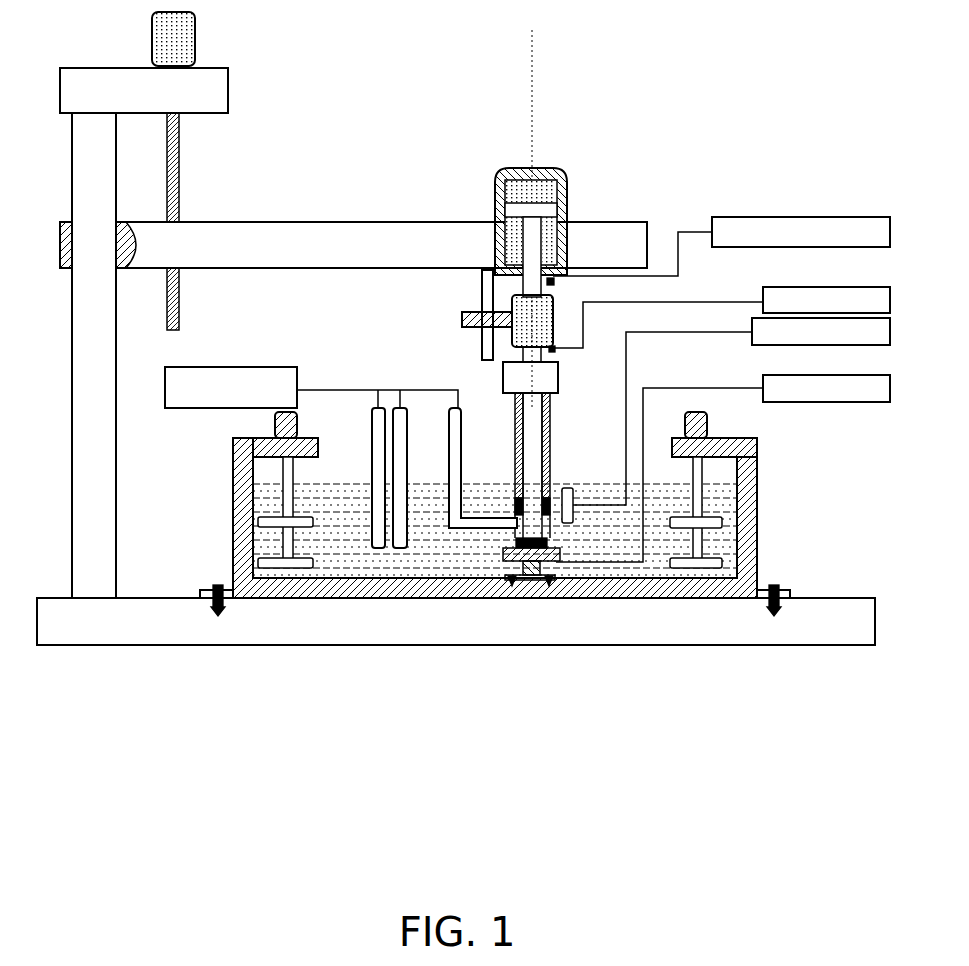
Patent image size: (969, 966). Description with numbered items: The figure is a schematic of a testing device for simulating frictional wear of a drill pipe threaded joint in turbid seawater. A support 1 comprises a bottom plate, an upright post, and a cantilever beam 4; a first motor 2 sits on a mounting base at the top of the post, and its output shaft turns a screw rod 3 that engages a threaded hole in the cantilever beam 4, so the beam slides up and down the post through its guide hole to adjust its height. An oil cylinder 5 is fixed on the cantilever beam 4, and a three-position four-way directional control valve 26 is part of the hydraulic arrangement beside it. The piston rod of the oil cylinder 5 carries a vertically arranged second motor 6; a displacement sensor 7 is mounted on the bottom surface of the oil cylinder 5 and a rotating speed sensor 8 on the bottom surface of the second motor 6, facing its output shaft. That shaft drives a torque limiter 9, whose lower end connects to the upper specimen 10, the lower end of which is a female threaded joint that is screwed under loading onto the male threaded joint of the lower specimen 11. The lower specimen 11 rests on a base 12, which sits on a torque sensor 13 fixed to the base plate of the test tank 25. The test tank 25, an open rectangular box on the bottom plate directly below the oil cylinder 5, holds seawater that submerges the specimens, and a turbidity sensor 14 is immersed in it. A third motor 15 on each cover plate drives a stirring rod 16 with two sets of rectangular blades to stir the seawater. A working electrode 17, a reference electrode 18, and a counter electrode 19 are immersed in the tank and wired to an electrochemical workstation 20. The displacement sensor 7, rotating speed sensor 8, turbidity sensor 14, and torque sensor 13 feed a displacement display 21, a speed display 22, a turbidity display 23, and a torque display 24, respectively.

The support 1 is at (90, 615).
The first motor 2 is at (165, 48).
The screw rod 3 is at (180, 152).
The cantilever beam 4 is at (215, 240).
The oil cylinder 5 is at (532, 192).
The second motor 6 is at (518, 305).
The displacement sensor 7 is at (552, 285).
The rotating speed sensor 8 is at (554, 352).
The torque limiter 9 is at (510, 385).
The upper specimen 10 is at (522, 420).
The lower specimen 11 is at (548, 516).
The base 12 is at (506, 553).
The torque sensor 13 is at (510, 573).
The turbidity sensor 14 is at (574, 503).
The third motor 15 is at (298, 422).
The stirring rod 16 is at (293, 466).
The working electrode 17 is at (452, 452).
The reference electrode 18 is at (400, 472).
The counter electrode 19 is at (378, 462).
The electrochemical workstation 20 is at (166, 390).
The displacement display 21 is at (890, 233).
The speed display 22 is at (890, 300).
The turbidity display 23 is at (890, 332).
The torque display 24 is at (890, 389).
The test tank 25 is at (757, 492).
The three-position four-way directional control valve 26 is at (486, 302).